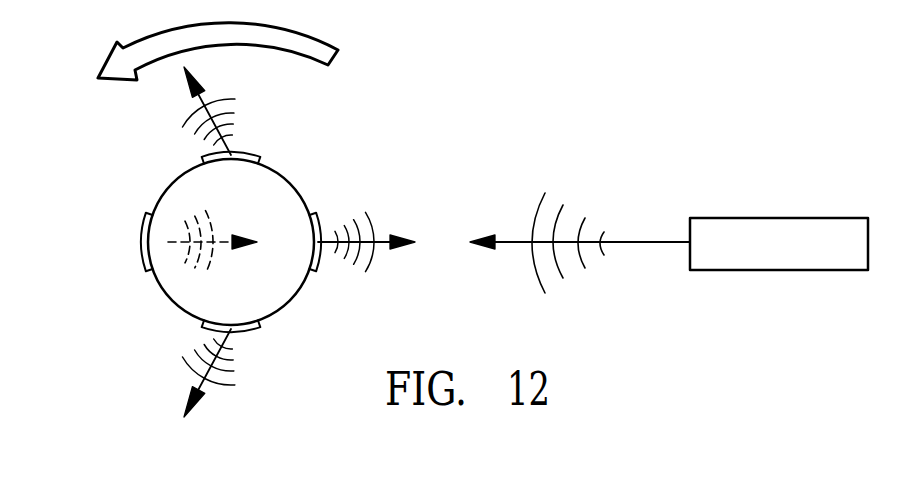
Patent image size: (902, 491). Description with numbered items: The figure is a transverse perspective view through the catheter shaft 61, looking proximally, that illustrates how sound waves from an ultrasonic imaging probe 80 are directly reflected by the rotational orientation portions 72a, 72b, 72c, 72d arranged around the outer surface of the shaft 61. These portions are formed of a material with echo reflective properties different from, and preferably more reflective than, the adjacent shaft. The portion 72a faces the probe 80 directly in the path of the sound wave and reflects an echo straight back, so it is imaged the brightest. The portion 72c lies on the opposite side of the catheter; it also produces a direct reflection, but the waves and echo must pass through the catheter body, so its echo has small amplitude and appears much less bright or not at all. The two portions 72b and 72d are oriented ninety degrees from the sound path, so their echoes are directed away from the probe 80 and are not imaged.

The catheter shaft 61 is at (167, 184).
The rotational orientation portion 72a is at (320, 220).
The rotational orientation portion 72b is at (254, 154).
The rotational orientation portion 72c is at (143, 250).
The rotational orientation portion 72d is at (252, 331).
The ultrasonic imaging probe 80 is at (769, 218).